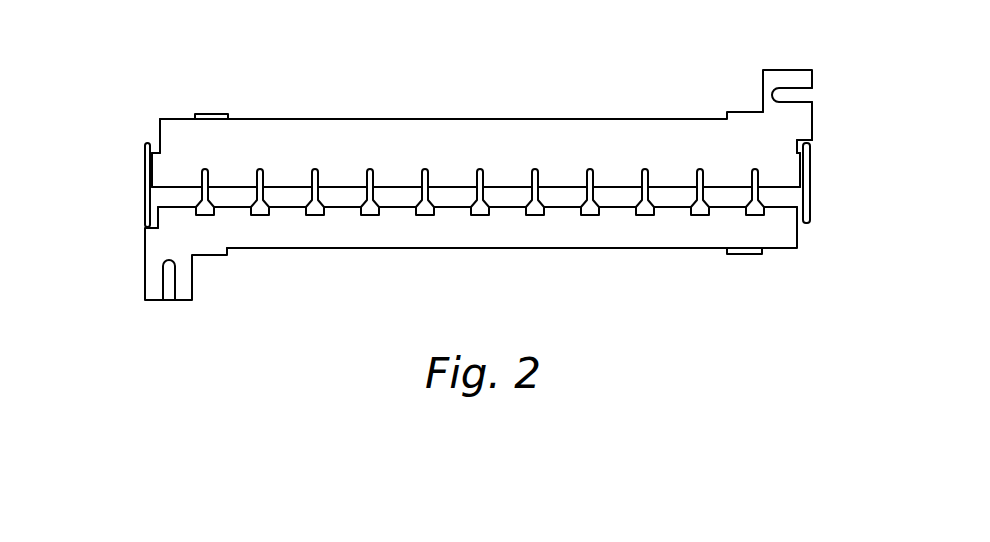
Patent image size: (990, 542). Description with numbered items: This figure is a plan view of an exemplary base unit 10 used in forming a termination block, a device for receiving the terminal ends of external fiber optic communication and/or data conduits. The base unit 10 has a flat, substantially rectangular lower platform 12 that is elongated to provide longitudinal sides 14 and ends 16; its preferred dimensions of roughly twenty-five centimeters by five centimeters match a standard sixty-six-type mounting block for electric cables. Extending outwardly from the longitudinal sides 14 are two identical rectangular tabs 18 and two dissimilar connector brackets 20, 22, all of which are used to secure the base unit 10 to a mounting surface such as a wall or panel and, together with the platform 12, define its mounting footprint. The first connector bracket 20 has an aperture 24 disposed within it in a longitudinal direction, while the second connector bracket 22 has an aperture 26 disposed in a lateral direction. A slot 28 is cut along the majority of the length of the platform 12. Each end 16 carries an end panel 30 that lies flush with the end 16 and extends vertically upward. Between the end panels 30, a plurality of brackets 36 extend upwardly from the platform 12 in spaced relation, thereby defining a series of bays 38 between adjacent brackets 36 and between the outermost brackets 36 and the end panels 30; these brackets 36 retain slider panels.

The base unit 10 is at (516, 178).
The lower platform 12 is at (290, 138).
The longitudinal sides 14 is at (510, 137).
The ends 16 is at (160, 133).
The rectangular tabs 18 is at (204, 113).
The first connector bracket 20 is at (784, 74).
The connector bracket 22 is at (150, 272).
The aperture 24 is at (805, 94).
The aperture 26 is at (169, 282).
The slot 28 is at (668, 210).
The end panel 30 is at (146, 182).
The brackets 36 is at (692, 187).
The bays 38 is at (180, 187).